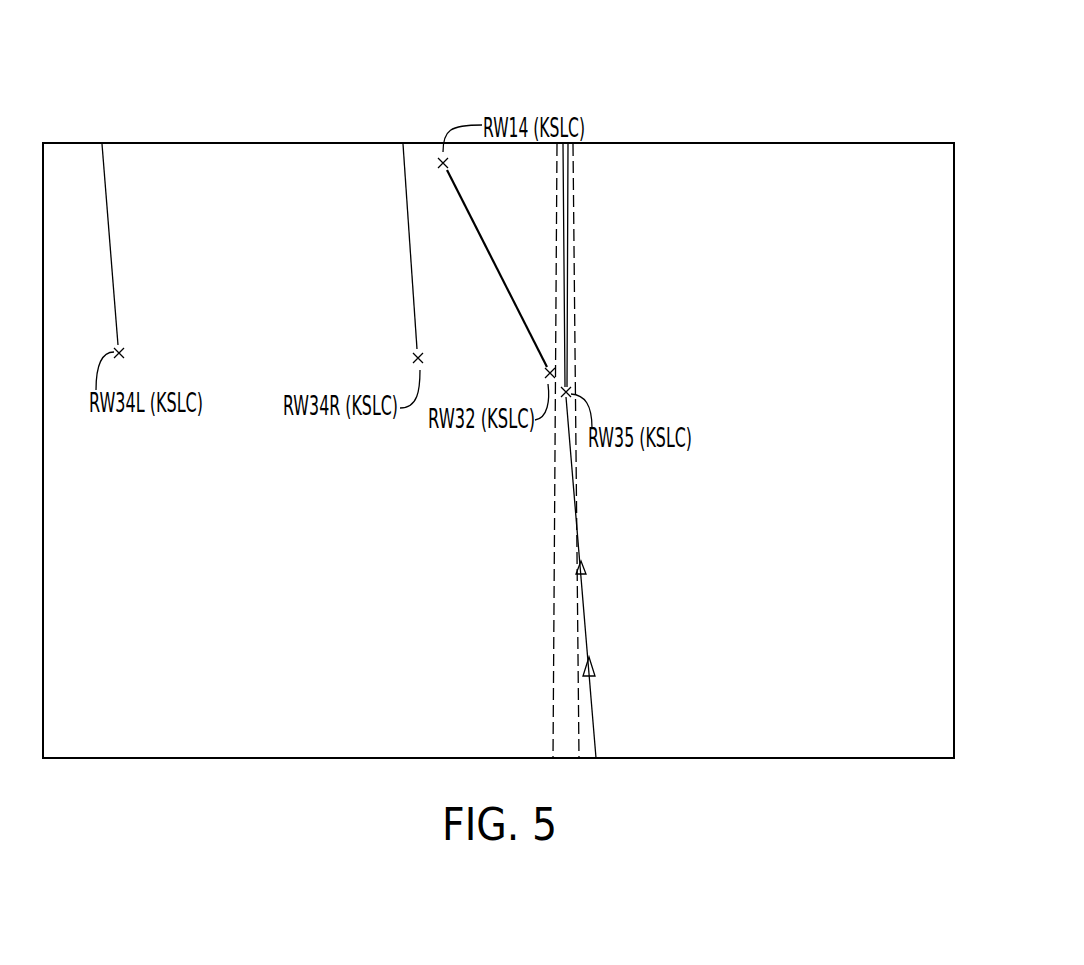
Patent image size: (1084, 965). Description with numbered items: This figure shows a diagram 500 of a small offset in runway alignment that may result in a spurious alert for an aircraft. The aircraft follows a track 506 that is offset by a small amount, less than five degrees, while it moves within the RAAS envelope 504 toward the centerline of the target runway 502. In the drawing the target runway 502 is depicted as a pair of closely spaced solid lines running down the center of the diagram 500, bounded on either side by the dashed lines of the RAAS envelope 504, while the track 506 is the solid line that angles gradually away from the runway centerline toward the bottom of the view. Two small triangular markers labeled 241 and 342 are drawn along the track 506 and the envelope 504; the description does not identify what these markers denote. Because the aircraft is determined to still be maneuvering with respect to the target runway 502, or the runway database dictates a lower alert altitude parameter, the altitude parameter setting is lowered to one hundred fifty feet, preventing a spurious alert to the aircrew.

The diagram 500 is at (152, 88).
The target runway 502 is at (565, 190).
The RAAS envelope 504 is at (556, 638).
The track 506 is at (586, 628).
The waypoint marker 241 is at (596, 568).
The waypoint marker 342 is at (605, 666).